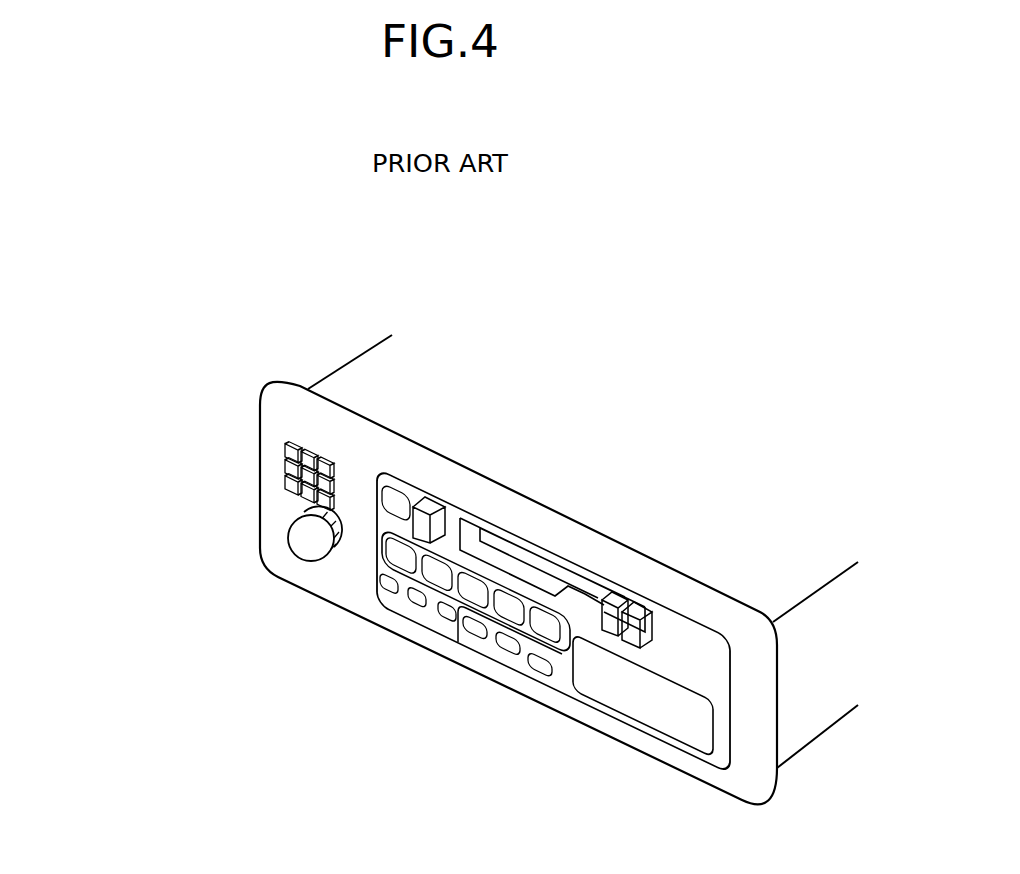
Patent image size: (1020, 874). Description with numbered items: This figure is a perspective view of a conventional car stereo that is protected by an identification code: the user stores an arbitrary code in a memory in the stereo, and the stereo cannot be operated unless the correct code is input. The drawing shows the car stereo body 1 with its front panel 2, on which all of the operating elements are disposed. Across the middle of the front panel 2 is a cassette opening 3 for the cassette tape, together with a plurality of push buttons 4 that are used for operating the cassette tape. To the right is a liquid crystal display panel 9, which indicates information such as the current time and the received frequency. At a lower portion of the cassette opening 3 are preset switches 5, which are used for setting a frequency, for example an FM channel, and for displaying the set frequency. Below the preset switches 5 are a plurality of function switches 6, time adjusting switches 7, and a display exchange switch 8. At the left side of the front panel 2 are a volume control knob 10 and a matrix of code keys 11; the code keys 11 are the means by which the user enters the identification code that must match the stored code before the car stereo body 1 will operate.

The car stereo body 1 is at (612, 427).
The front panel 2 is at (298, 411).
The cassette opening 3 is at (547, 557).
The push buttons 4 is at (428, 506).
The preset switches 5 is at (388, 567).
The function switches 6 is at (416, 617).
The time adjusting switches 7 is at (512, 649).
The display exchange switch 8 is at (538, 669).
The liquid crystal display panel 9 is at (657, 727).
The volume control knob 10 is at (302, 537).
The matrix of code keys 11 is at (268, 456).